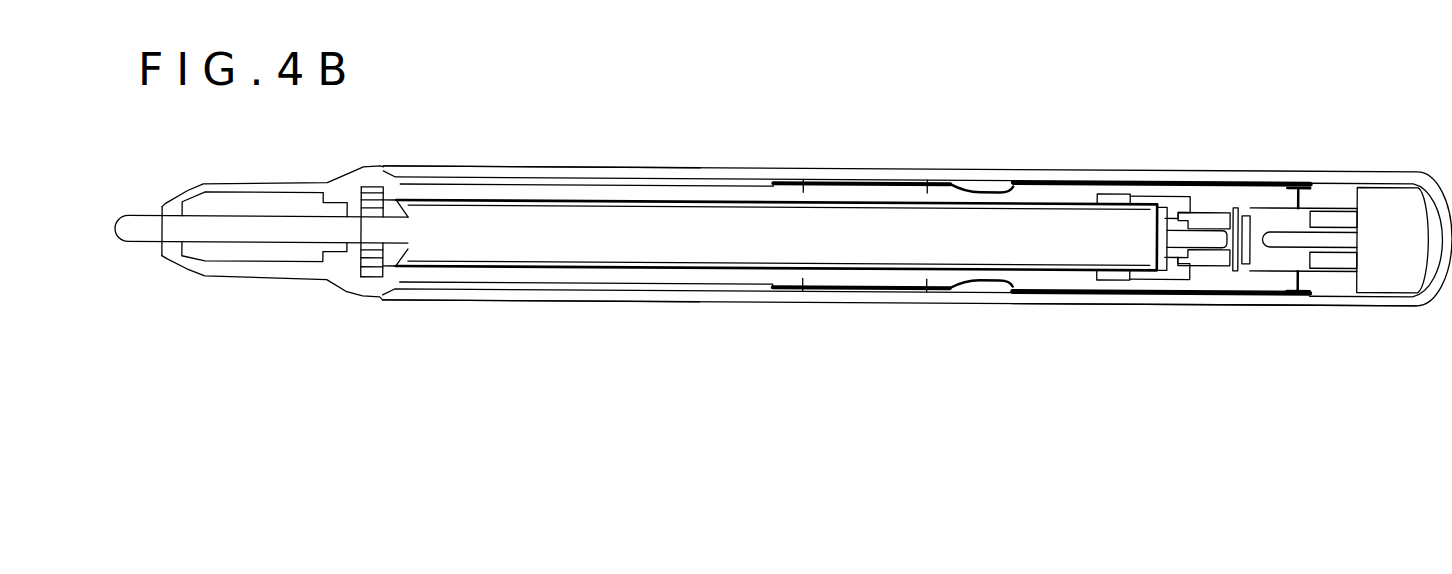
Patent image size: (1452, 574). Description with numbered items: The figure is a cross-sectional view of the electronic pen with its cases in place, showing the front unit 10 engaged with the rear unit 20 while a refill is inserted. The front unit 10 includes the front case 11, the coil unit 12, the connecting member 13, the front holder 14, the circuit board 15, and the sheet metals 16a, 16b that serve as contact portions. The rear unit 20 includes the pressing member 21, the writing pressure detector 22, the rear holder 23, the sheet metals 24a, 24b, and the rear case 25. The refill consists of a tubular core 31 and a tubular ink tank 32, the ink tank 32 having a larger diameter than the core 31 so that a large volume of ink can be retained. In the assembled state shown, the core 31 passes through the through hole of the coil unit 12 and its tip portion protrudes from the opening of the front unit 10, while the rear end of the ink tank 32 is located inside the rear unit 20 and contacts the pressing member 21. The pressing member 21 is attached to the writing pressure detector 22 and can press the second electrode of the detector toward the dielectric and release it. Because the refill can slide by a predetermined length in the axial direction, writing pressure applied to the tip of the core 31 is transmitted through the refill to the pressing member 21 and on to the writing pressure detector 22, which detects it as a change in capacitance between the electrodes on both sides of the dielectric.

The front unit 10 is at (486, 312).
The front case 11 is at (550, 158).
The coil unit 12 is at (248, 190).
The connecting member 13 is at (355, 203).
The front holder 14 is at (468, 176).
The circuit board 15 is at (648, 174).
The sheet metal (contact portion) 16a is at (854, 178).
The sheet metal (contact portion) 16b is at (858, 288).
The rear unit 20 is at (1042, 313).
The pressing member 21 is at (1162, 278).
The writing pressure detector 22 is at (1215, 283).
The rear holder 23 is at (1181, 190).
The sheet metal 24a is at (1267, 183).
The sheet metal 24b is at (1263, 297).
The rear case 25 is at (1114, 163).
The core 31 is at (136, 229).
The ink tank 32 is at (626, 246).